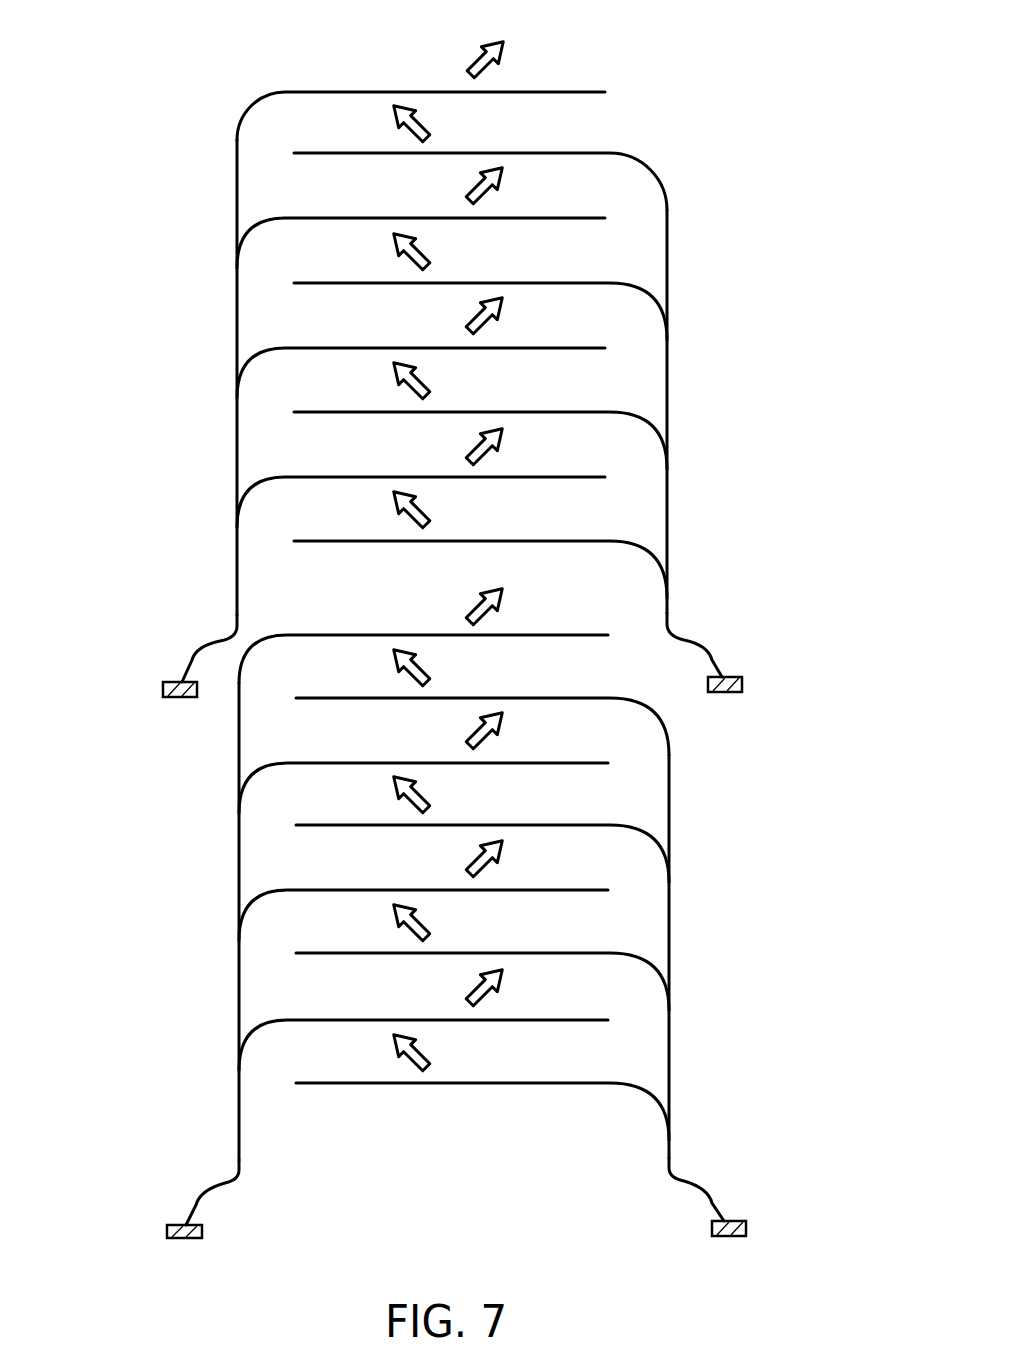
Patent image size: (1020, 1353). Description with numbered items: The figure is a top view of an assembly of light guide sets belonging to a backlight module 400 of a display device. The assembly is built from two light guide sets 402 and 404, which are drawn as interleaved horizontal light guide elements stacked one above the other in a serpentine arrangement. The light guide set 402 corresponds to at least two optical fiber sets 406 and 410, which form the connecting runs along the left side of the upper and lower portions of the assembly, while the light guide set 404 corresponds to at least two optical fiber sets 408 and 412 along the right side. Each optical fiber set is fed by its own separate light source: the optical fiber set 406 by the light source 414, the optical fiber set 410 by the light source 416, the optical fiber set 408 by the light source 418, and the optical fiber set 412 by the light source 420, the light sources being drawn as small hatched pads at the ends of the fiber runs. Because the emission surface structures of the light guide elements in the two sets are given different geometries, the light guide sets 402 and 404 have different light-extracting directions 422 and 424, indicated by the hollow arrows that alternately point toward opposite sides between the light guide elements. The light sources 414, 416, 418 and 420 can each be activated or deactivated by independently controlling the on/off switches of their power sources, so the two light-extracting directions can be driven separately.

The backlight module 400 is at (183, 88).
The light guide set 402 is at (345, 90).
The light guide set 404 is at (575, 151).
The optical fiber set 406 is at (237, 330).
The optical fiber set 408 is at (667, 378).
The optical fiber set 410 is at (239, 875).
The optical fiber set 412 is at (669, 920).
The light source 414 is at (165, 688).
The light source 416 is at (168, 1230).
The light source 418 is at (744, 685).
The light source 420 is at (746, 1228).
The light-extracting direction 422 is at (474, 67).
The light-extracting direction 424 is at (430, 128).